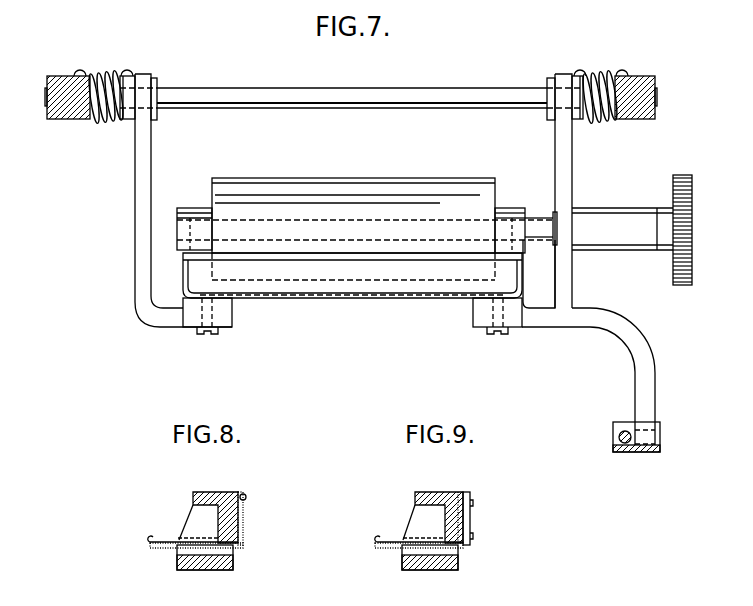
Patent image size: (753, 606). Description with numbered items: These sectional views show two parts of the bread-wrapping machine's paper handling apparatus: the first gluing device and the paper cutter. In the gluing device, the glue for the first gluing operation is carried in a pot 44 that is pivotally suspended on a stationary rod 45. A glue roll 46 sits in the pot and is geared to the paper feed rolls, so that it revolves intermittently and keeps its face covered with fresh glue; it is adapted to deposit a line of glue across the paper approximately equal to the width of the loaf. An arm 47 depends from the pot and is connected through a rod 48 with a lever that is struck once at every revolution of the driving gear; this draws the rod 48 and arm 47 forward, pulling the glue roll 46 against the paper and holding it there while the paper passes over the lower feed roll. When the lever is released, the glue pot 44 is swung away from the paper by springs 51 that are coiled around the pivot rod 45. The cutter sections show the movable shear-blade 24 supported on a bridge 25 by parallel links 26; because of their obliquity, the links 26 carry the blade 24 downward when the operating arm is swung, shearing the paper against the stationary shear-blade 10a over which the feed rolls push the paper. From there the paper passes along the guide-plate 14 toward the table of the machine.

In FIG. 7, the glue pot 44 is at (352, 293).
In FIG. 7, the stationary rod 45 is at (268, 90).
In FIG. 7, the glue roll 46 is at (345, 178).
In FIG. 7, the arm 47 is at (650, 382).
In FIG. 7, the rod 48 is at (618, 436).
In FIG. 7, the springs 51 is at (106, 74).
In FIG. 8, the bridge 25 is at (202, 492).
In FIG. 9, the bridge 25 is at (433, 492).
In FIG. 8, the movable shear-blade 24 is at (242, 545).
In FIG. 9, the movable shear-blade 24 is at (463, 548).
In FIG. 8, the guide-plate 14 is at (157, 540).
In FIG. 9, the guide-plate 14 is at (388, 540).
In FIG. 8, the stationary shear-blade 10a is at (216, 560).
In FIG. 9, the stationary shear-blade 10a is at (435, 565).
In FIG. 9, the parallel links 26 is at (471, 522).